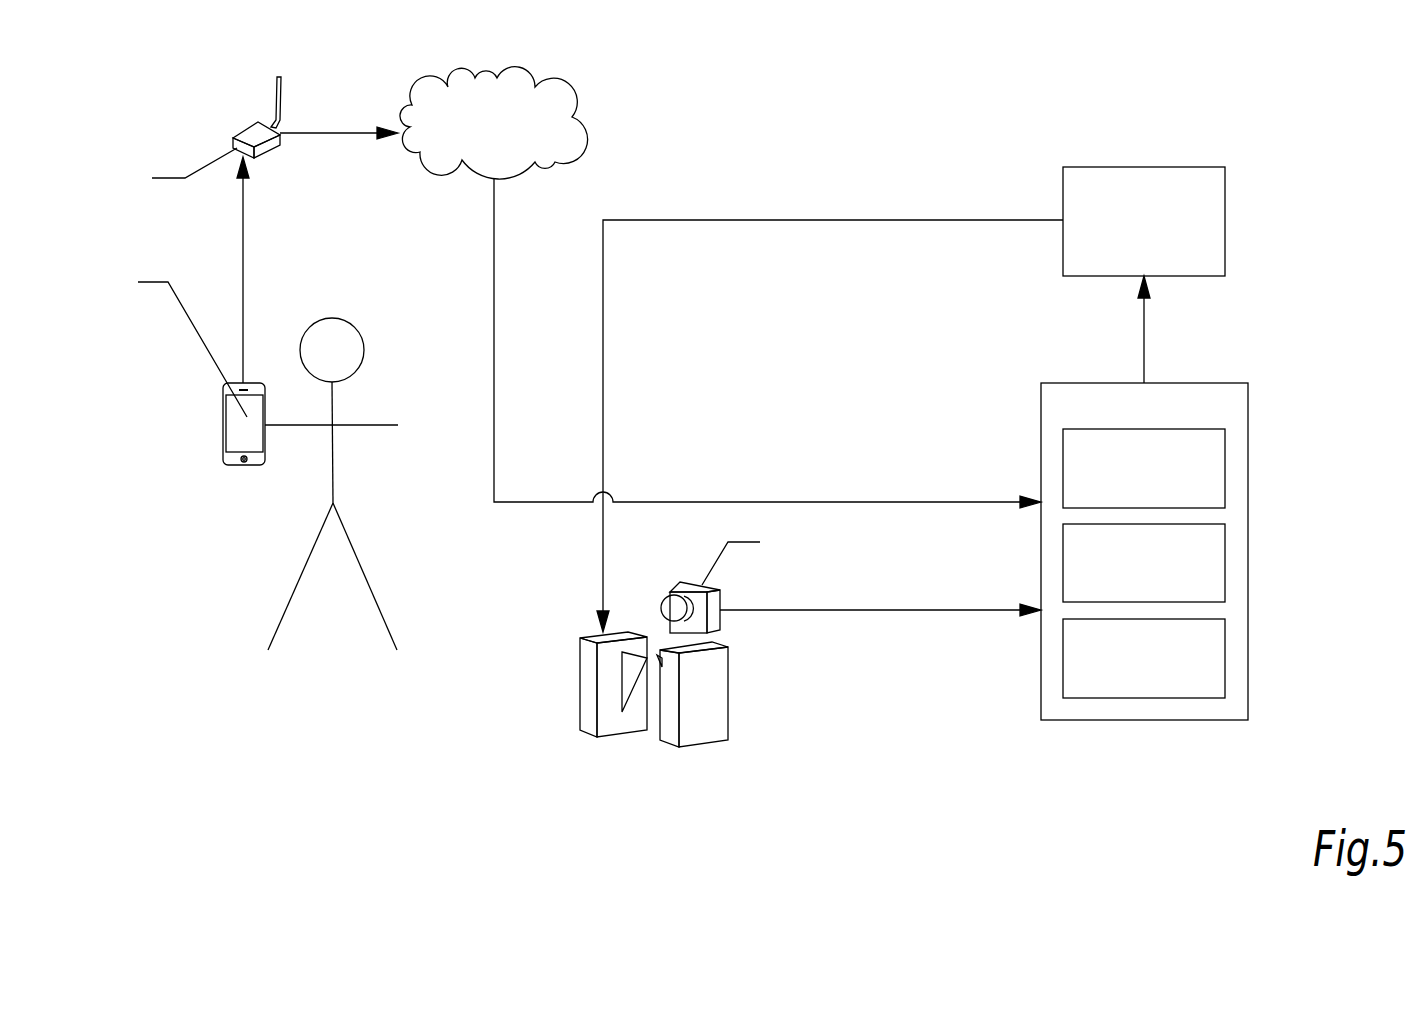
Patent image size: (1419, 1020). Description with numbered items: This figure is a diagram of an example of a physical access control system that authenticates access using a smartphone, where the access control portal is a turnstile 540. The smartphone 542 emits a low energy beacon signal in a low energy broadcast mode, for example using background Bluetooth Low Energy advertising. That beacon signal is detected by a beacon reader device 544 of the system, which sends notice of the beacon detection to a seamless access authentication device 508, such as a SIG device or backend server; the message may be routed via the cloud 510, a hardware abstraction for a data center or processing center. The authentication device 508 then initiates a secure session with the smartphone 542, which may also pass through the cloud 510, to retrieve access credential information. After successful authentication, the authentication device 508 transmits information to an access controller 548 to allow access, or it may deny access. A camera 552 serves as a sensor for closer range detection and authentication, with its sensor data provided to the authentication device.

The cloud 510 is at (571, 86).
The beacon reader device 544 is at (241, 124).
The smartphone 542 is at (222, 422).
The access controller 548 is at (1143, 167).
The seamless access authentication device 508 is at (1250, 400).
The camera 552 is at (679, 583).
The turnstile 540 is at (731, 660).